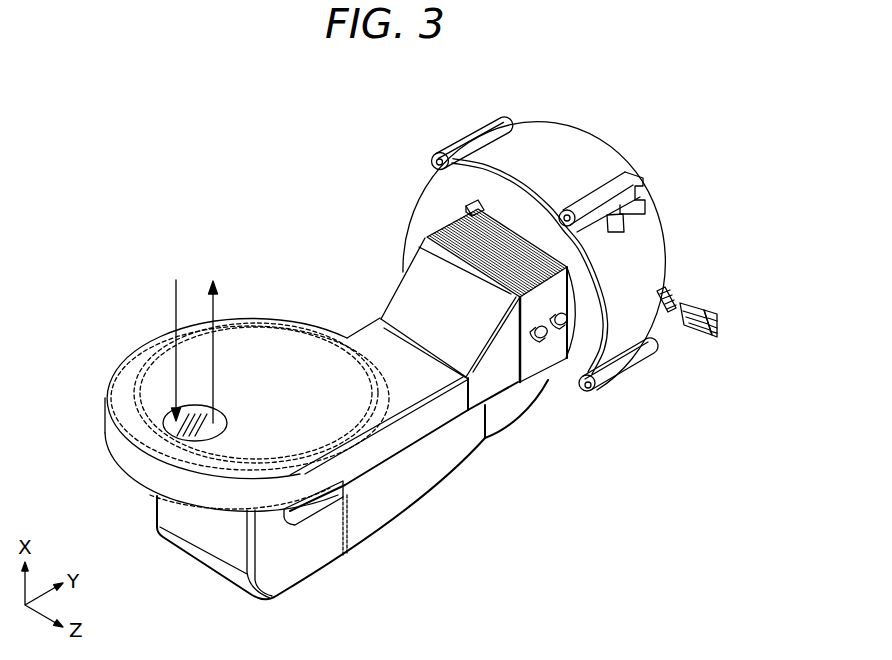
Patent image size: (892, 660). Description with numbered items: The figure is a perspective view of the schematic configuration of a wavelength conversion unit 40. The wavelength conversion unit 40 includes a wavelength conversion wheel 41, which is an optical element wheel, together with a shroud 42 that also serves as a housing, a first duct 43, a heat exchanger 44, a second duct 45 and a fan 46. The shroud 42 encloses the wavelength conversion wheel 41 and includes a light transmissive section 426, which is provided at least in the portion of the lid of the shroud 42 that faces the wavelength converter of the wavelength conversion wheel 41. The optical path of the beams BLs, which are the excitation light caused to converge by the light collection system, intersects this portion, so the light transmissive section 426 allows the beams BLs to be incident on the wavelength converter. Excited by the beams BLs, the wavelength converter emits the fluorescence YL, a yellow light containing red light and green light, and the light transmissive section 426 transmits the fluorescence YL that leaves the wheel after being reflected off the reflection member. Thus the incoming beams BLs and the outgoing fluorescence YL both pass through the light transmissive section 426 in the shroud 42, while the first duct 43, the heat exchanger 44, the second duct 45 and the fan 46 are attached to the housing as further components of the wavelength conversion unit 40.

The wavelength conversion unit 40 is at (575, 264).
The wavelength conversion wheel 41 is at (295, 320).
The shroud 42 is at (318, 316).
The first duct 43 is at (395, 270).
The heat exchanger 44 is at (434, 220).
The second duct 45 is at (552, 415).
The fan 46 is at (608, 146).
The light transmissive section 426 is at (165, 420).
The beams BLs is at (175, 315).
The fluorescence YL is at (214, 314).